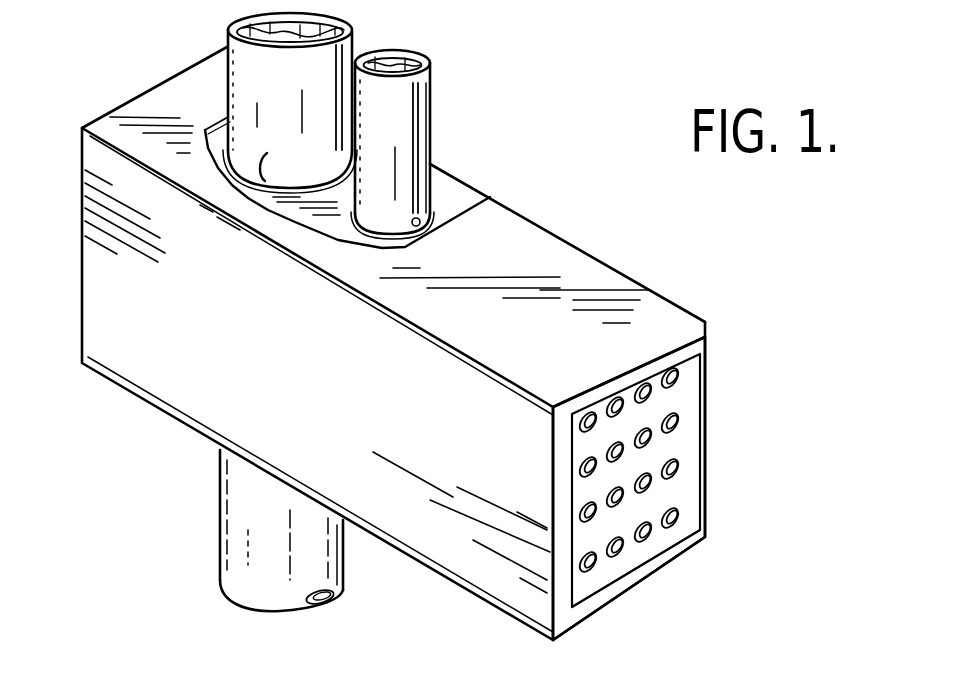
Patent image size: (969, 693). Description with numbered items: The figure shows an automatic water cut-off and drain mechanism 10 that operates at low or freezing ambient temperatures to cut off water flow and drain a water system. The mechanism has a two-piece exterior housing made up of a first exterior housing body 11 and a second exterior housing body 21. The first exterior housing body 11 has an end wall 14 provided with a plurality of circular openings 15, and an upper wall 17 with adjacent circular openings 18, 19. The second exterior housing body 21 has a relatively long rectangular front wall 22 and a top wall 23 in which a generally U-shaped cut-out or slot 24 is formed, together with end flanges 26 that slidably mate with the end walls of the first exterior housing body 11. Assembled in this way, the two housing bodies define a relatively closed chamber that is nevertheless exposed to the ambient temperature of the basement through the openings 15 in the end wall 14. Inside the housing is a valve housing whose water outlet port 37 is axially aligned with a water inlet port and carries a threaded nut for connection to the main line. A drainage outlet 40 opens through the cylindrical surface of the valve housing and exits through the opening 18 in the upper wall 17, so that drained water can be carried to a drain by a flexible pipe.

The automatic drain mechanism 10 is at (576, 114).
The first exterior housing body 11 is at (706, 382).
The end wall 14 is at (690, 426).
The circular openings 15 is at (674, 516).
The upper wall 17 is at (452, 184).
The circular opening 18 is at (416, 225).
The circular opening 19 is at (280, 155).
The second exterior housing body 21 is at (90, 318).
The front wall 22 is at (322, 369).
The top wall 23 is at (546, 355).
The U-shaped cut-out 24 is at (336, 232).
The end flanges 26 is at (603, 390).
The water outlet port 37 is at (298, 83).
The drainage outlet 40 is at (406, 126).